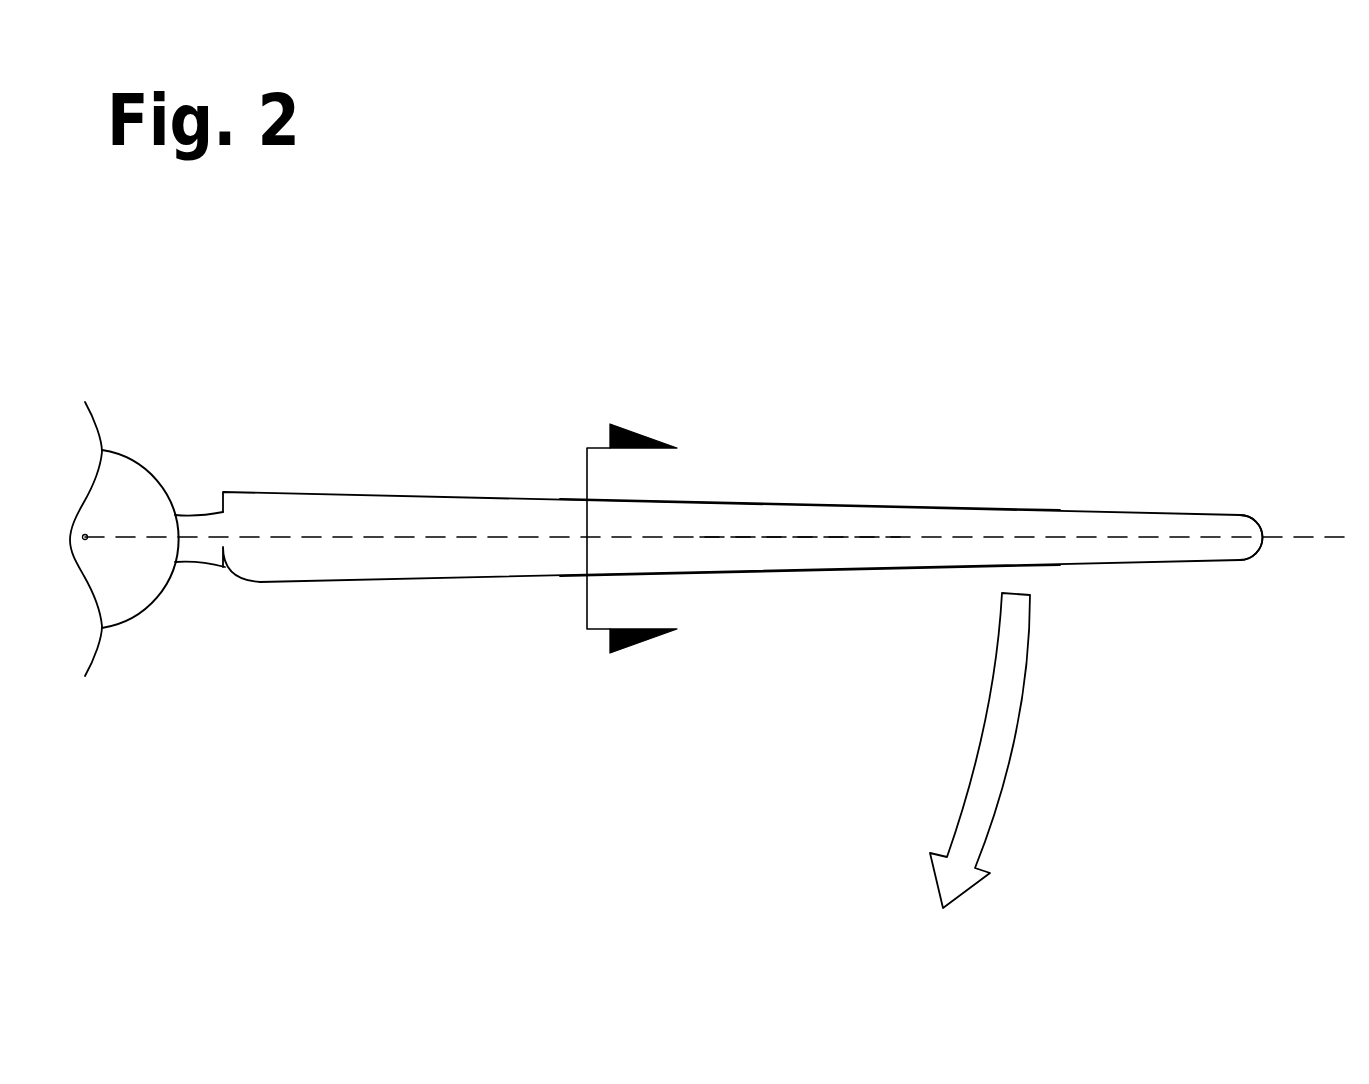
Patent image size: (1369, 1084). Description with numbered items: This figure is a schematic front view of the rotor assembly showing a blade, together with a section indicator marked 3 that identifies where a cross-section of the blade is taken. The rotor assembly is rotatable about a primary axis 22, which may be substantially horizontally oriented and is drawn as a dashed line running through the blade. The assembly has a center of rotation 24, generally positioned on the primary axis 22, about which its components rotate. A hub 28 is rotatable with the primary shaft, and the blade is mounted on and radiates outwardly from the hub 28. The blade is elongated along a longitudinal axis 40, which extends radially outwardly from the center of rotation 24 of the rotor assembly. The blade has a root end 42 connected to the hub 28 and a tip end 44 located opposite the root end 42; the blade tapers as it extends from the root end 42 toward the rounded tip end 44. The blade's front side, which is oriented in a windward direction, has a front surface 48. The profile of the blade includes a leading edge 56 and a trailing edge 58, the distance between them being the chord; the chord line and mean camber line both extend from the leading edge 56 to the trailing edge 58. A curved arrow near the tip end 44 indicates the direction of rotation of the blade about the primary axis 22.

The primary axis 22 is at (85, 537).
The center of rotation 24 is at (85, 537).
The hub 28 is at (163, 587).
The longitudinal axis 40 is at (292, 533).
The root end 42 is at (187, 515).
The tip end 44 is at (1260, 528).
The front surface 48 is at (790, 520).
The leading edge 56 is at (755, 577).
The trailing edge 58 is at (950, 507).
The section line 3- 3 is at (648, 538).